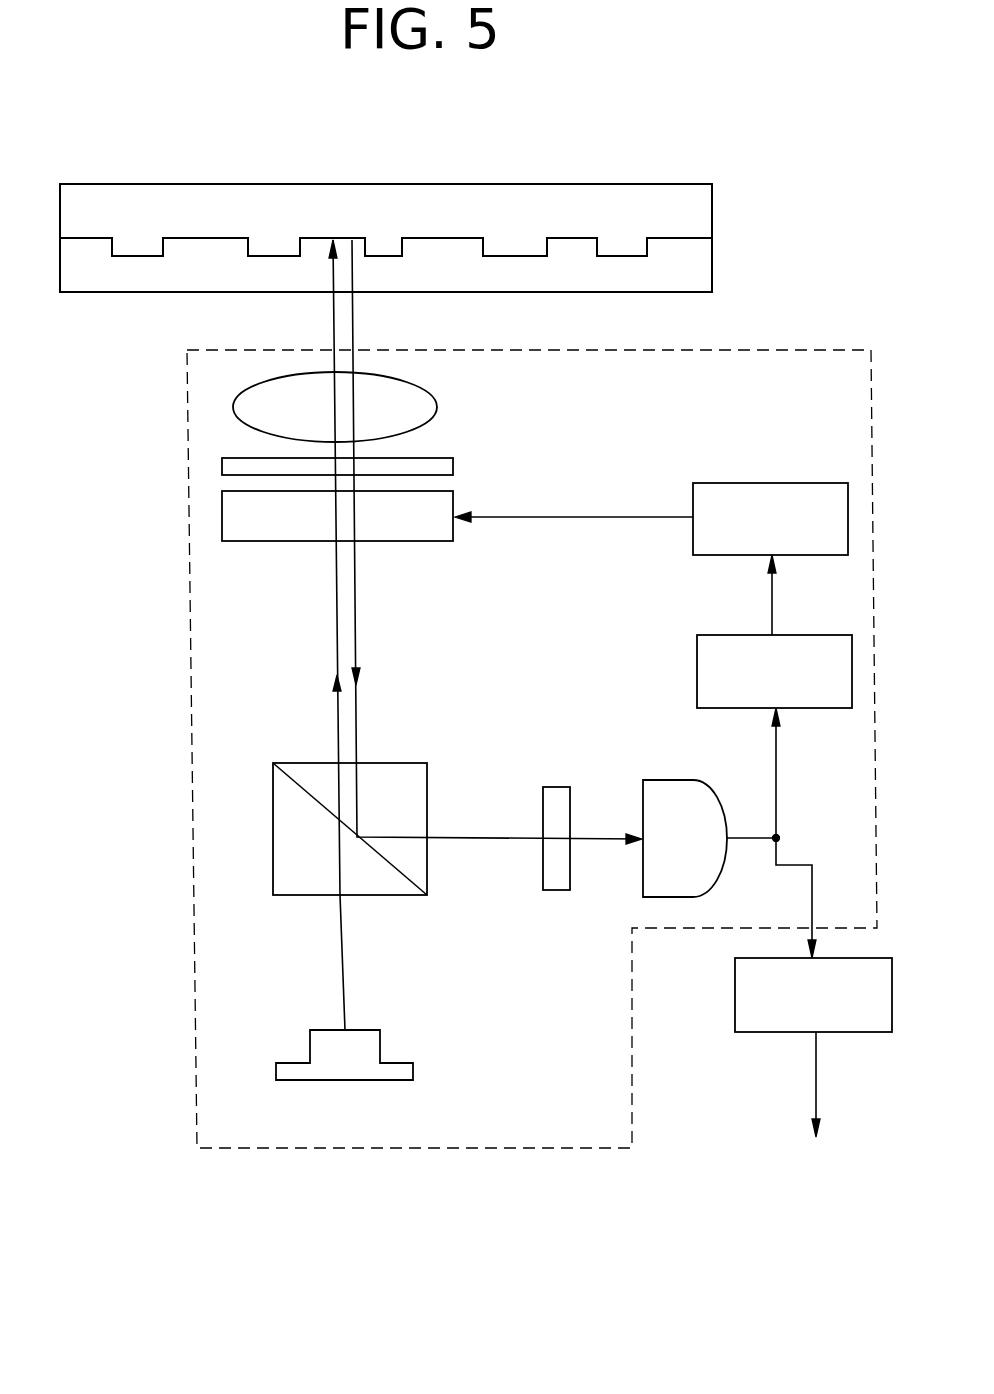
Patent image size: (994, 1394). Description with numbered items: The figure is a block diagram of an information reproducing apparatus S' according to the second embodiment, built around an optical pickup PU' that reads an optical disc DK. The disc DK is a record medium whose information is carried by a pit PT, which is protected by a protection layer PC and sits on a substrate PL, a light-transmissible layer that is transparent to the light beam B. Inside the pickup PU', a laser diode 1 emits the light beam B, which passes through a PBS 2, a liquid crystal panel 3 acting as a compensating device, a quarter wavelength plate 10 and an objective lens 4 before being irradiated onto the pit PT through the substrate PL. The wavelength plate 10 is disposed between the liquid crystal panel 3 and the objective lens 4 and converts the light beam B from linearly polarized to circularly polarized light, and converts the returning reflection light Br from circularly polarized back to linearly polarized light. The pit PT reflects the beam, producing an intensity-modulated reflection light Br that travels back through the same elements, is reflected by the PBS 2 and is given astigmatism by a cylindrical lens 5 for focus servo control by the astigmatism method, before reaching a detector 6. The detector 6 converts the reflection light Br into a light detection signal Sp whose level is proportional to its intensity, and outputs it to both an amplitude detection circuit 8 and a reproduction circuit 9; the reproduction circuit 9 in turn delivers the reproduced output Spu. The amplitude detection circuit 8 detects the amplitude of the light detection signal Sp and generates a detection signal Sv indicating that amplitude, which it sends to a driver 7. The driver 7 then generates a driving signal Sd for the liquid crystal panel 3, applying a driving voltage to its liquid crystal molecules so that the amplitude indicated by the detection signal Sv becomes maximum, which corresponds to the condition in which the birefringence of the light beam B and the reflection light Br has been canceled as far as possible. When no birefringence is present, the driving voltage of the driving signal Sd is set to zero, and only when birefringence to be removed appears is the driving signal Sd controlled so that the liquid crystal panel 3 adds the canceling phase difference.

The laser diode 1 is at (382, 1033).
The PBS (Polarization Beam Splitter) 2 is at (418, 763).
The liquid crystal panel 3 is at (440, 541).
The objective lens 4 is at (437, 400).
The cylindrical lens 5 is at (543, 880).
The detector 6 is at (660, 780).
The driver 7 is at (815, 483).
The amplitude detection circuit 8 is at (820, 635).
The reproduction circuit 9 is at (813, 1027).
The ¼ wavelength plate 10 is at (453, 466).
The protection layer PC is at (387, 200).
The pit PT is at (515, 255).
The optical disc DK is at (712, 210).
The substrate PL is at (712, 273).
The light beam B is at (333, 577).
The reflection light Br is at (357, 577).
The driving signal Sd is at (620, 520).
The detection signal Sv is at (770, 593).
The light detection signal Sp is at (750, 842).
The reproduction signal Spu is at (813, 1082).
The optical pickup PU' is at (532, 781).
The information reproducing apparatus S' is at (635, 1228).